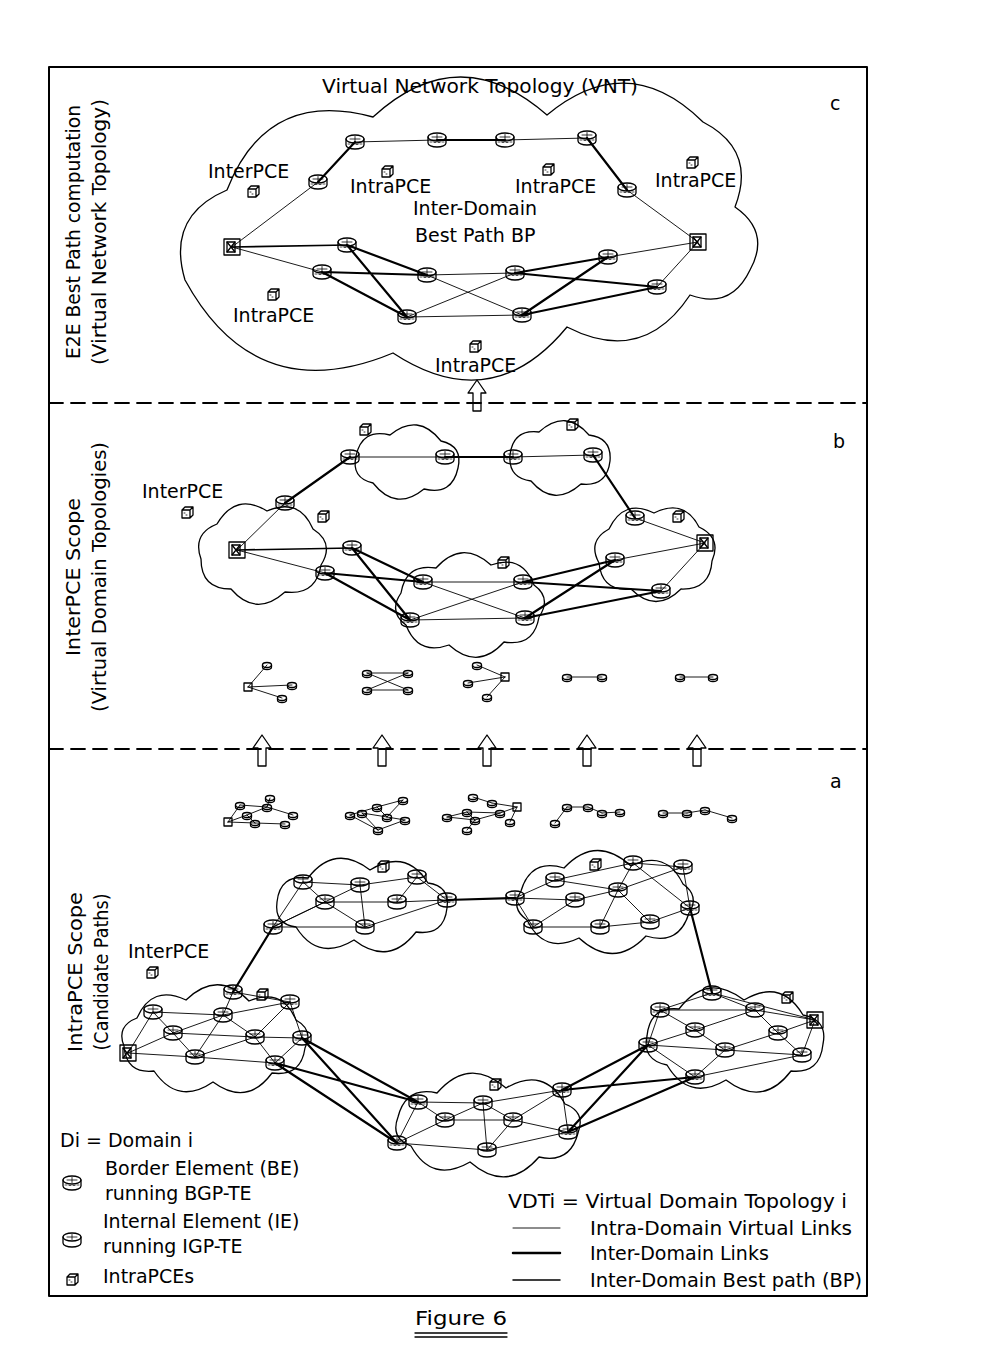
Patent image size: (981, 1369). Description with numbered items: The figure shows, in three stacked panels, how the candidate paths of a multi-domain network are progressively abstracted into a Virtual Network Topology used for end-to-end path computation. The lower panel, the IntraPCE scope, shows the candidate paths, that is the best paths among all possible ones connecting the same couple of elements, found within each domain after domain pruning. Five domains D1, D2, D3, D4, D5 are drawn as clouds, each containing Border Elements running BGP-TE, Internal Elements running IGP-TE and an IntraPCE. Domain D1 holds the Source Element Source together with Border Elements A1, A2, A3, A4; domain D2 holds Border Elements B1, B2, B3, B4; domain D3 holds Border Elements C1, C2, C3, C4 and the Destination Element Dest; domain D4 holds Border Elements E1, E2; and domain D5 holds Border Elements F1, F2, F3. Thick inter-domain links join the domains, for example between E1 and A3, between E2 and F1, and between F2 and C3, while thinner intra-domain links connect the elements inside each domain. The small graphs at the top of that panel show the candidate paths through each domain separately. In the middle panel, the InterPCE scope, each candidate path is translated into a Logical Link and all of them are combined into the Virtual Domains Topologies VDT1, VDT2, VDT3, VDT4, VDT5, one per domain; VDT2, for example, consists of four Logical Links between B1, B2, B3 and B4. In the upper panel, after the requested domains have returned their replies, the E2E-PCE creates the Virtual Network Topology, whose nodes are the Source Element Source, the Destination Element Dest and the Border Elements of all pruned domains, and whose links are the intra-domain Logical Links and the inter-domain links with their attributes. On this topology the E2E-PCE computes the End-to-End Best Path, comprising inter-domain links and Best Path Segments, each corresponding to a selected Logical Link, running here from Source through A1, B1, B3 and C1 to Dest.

In FIG. 6c, the border element A1 of domain D1 A1 is at (343, 234).
In FIG. 6b, the border element A1 of domain D1 A1 is at (362, 535).
In FIG. 6a, the border element A1 of domain D1 A1 is at (319, 1033).
In FIG. 6c, the border element A2 of domain D1 A2 is at (315, 283).
In FIG. 6b, the border element A2 of domain D1 A2 is at (320, 588).
In FIG. 6a, the border element A2 of domain D1 A2 is at (269, 1074).
In FIG. 6c, the border element A3 of domain D1 A3 is at (322, 194).
In FIG. 6b, the border element A3 of domain D1 A3 is at (282, 491).
In FIG. 6a, the border element A3 of domain D1 A3 is at (217, 982).
In FIG. 6a, the border element A4 of domain D1 A4 is at (308, 997).
In FIG. 6c, the border element B1 of domain D2 B1 is at (417, 263).
In FIG. 6b, the border element B1 of domain D2 B1 is at (417, 567).
In FIG. 6a, the border element B1 of domain D2 B1 is at (417, 1089).
In FIG. 6c, the border element B2 of domain D2 B2 is at (397, 327).
In FIG. 6b, the border element B2 of domain D2 B2 is at (394, 625).
In FIG. 6a, the border element B2 of domain D2 B2 is at (389, 1154).
In FIG. 6c, the border element B3 of domain D2 B3 is at (529, 262).
In FIG. 6b, the border element B3 of domain D2 B3 is at (533, 570).
In FIG. 6a, the border element B3 of domain D2 B3 is at (558, 1080).
In FIG. 6c, the border element B4 of domain D2 B4 is at (535, 326).
In FIG. 6b, the border element B4 of domain D2 B4 is at (536, 632).
In FIG. 6a, the border element B4 of domain D2 B4 is at (577, 1144).
In FIG. 6c, the border element C1 of domain D3 C1 is at (603, 246).
In FIG. 6b, the border element C1 of domain D3 C1 is at (598, 552).
In FIG. 6a, the border element C1 of domain D3 C1 is at (632, 1043).
In FIG. 6c, the border element C2 of domain D3 C2 is at (651, 300).
In FIG. 6b, the border element C2 of domain D3 C2 is at (671, 605).
In FIG. 6a, the border element C2 of domain D3 C2 is at (694, 1090).
In FIG. 6c, the border element C3 of domain D3 C3 is at (624, 203).
In FIG. 6b, the border element C3 of domain D3 C3 is at (640, 505).
In FIG. 6a, the border element C3 of domain D3 C3 is at (718, 981).
In FIG. 6a, the border element C4 of domain D3 C4 is at (646, 1000).
In FIG. 6c, the border element E1 of domain D4 E1 is at (357, 129).
In FIG. 6b, the border element E1 of domain D4 E1 is at (338, 448).
In FIG. 6a, the border element E1 of domain D4 E1 is at (258, 921).
In FIG. 6c, the border element E2 of domain D4 E2 is at (445, 128).
In FIG. 6b, the border element E2 of domain D4 E2 is at (451, 444).
In FIG. 6a, the border element E2 of domain D4 E2 is at (462, 911).
In FIG. 6c, the border element F1 of domain D5 F1 is at (501, 128).
In FIG. 6b, the border element F1 of domain D5 F1 is at (500, 467).
In FIG. 6a, the border element F1 of domain D5 F1 is at (510, 882).
In FIG. 6c, the border element F2 of domain D5 F2 is at (593, 127).
In FIG. 6b, the border element F2 of domain D5 F2 is at (607, 443).
In FIG. 6a, the border element F2 of domain D5 F2 is at (704, 908).
In FIG. 6a, the border element F3 of domain D5 F3 is at (697, 862).
In FIG. 6c, the domain D1 is at (275, 282).
In FIG. 6b, the domain D1 is at (261, 606).
In FIG. 6a, the domain D1 is at (215, 931).
In FIG. 6c, the domain D2 is at (476, 333).
In FIG. 6b, the domain D2 is at (505, 658).
In FIG. 6a, the domain D2 is at (463, 972).
In FIG. 6c, the domain D3 is at (622, 156).
In FIG. 6b, the domain D3 is at (730, 580).
In FIG. 6a, the domain D3 is at (633, 931).
In FIG. 6c, the domain D4 is at (390, 159).
In FIG. 6b, the domain D4 is at (363, 500).
In FIG. 6a, the domain D4 is at (449, 868).
In FIG. 6b, the domain D5 is at (526, 495).
In FIG. 6a, the domain D5 is at (626, 865).
In FIG. 6b, the virtual domain topology 1 VDT1 is at (264, 614).
In FIG. 6b, the Virtual Domains Topology VDT2 is at (448, 638).
In FIG. 6b, the virtual domain topology 3 VDT3 is at (585, 616).
In FIG. 6b, the virtual domain topology 4 VDT4 is at (480, 574).
In FIG. 6b, the virtual domain topology 5 VDT5 is at (614, 571).
In FIG. 6c, the Source Element Source is at (250, 233).
In FIG. 6b, the Source Element Source is at (265, 582).
In FIG. 6a, the Source Element Source is at (185, 1087).
In FIG. 6c, the Destination Element Dest is at (725, 228).
In FIG. 6b, the Destination Element Dest is at (745, 533).
In FIG. 6a, the Destination Element Dest is at (850, 1007).